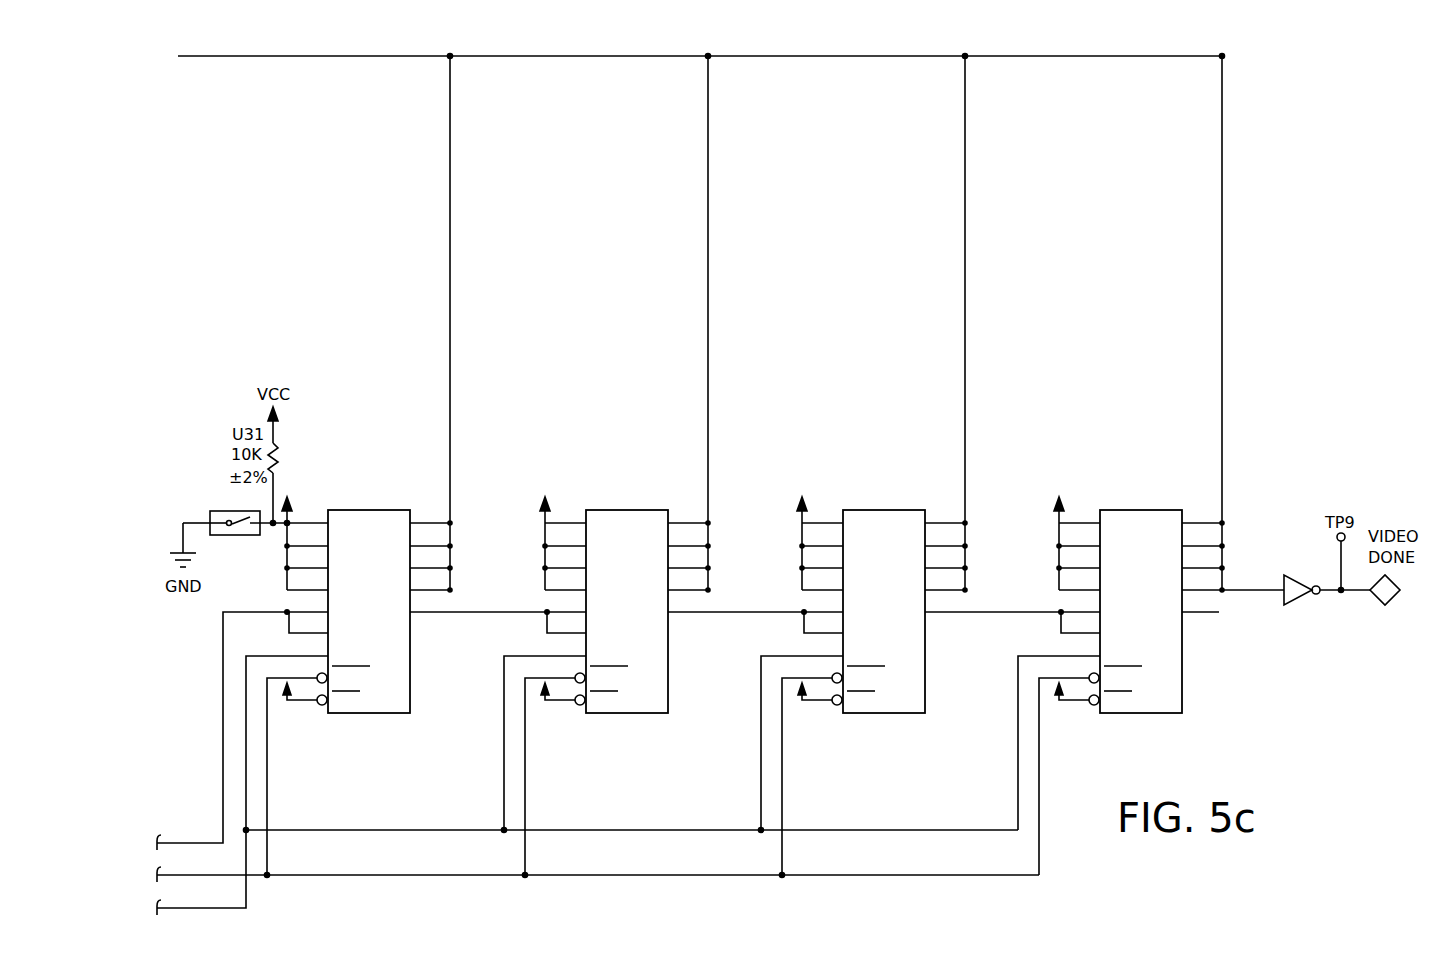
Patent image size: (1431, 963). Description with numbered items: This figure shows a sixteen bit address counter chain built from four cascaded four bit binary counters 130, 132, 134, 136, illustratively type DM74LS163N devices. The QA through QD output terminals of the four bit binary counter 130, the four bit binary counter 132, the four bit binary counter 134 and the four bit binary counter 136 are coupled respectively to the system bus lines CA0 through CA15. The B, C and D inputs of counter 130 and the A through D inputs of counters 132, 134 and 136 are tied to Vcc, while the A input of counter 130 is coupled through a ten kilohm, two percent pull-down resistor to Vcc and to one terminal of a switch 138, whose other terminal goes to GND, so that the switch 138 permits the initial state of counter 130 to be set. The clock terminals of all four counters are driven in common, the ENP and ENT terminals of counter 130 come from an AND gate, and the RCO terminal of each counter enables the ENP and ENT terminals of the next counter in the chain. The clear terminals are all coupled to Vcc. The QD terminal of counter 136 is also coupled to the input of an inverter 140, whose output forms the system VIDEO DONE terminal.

The four bit binary counter 130 is at (369, 452).
The four bit binary counter 132 is at (654, 465).
The four bit binary counter 134 is at (911, 465).
The four bit binary counter 136 is at (1144, 465).
The switch 138 is at (218, 511).
The inverter 140 is at (1284, 606).